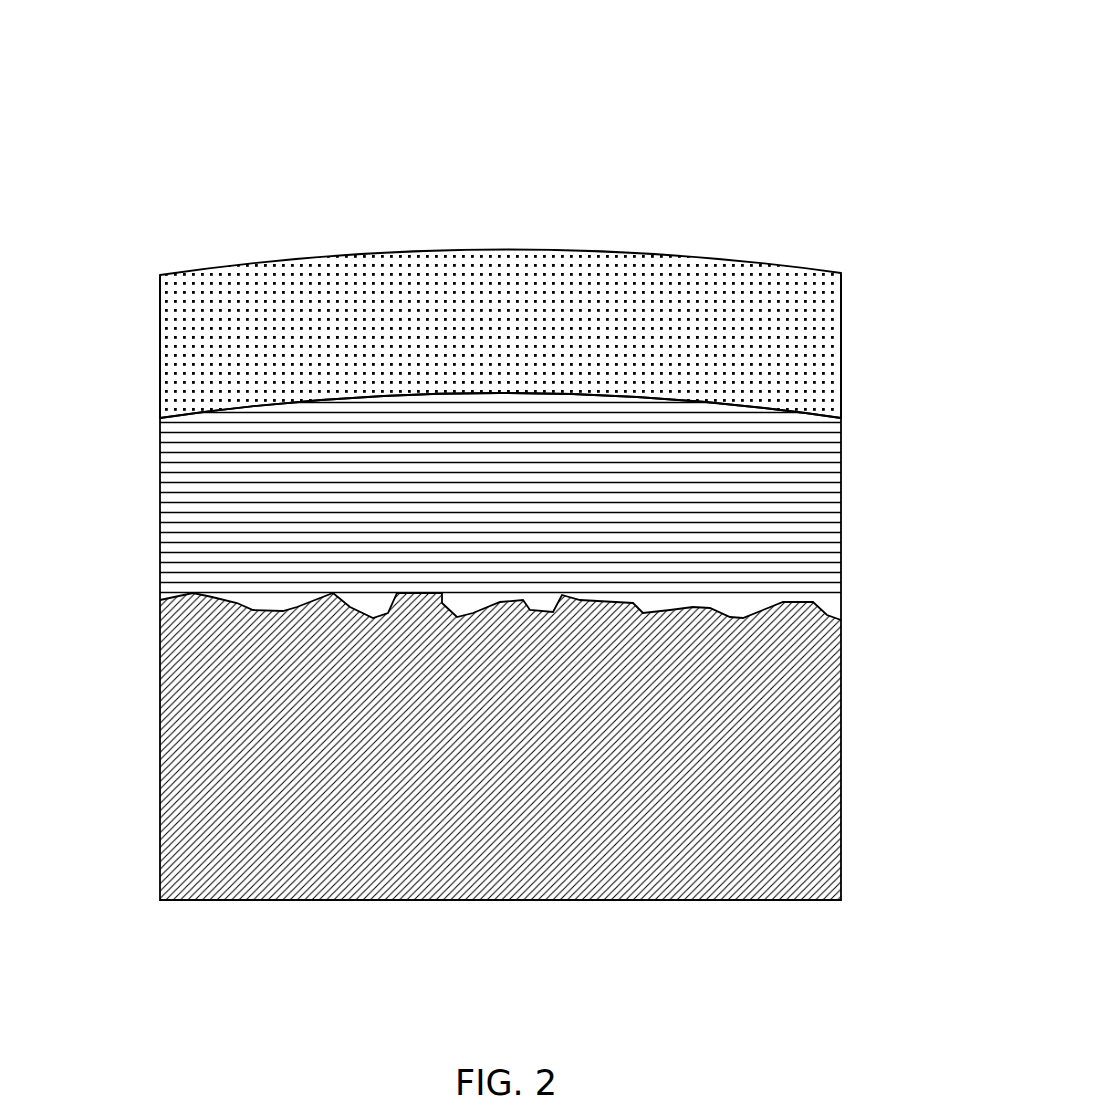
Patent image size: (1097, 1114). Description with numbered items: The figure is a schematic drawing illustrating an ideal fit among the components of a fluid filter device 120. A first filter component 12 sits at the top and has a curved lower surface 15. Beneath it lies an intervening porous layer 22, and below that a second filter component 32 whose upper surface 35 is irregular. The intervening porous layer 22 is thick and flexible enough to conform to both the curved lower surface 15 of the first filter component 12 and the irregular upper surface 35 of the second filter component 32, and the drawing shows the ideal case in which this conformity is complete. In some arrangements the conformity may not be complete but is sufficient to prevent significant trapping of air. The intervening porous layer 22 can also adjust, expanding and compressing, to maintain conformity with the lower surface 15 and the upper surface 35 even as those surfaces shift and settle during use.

The filter device 120 is at (595, 193).
The first filter component 12 is at (518, 334).
The curved lower surface 15 is at (258, 403).
The intervening porous layer 22 is at (518, 516).
The second filter component 32 is at (518, 762).
The irregular upper surface 35 is at (735, 612).